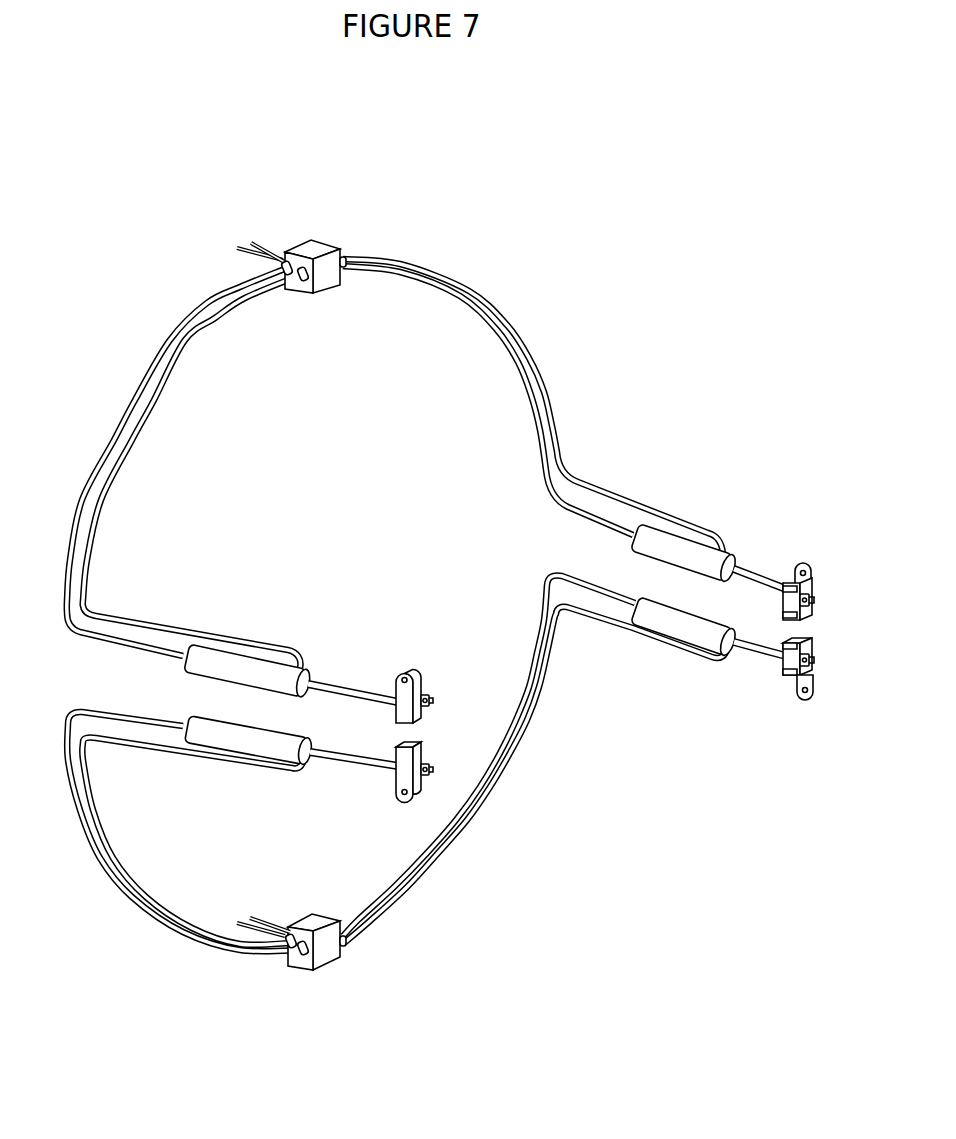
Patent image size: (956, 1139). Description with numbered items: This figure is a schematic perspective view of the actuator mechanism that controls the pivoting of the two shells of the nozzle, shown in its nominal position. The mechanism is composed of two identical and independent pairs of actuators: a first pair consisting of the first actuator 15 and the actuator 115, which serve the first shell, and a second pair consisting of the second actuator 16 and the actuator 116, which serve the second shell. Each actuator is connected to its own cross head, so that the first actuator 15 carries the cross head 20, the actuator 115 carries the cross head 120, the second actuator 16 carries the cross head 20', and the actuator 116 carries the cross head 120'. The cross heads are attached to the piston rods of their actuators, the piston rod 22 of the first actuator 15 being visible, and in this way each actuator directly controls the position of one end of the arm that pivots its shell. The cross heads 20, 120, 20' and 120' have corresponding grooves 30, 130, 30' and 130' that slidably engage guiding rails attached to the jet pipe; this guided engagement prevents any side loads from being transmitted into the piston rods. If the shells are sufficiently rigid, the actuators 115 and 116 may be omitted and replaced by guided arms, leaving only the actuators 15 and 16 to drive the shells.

The first actuator 15 is at (225, 663).
The second actuator 16 is at (270, 743).
The piston rod 22 is at (338, 678).
The cross head 20 is at (372, 701).
The cross head 20' is at (377, 788).
The groove 30 is at (460, 673).
The groove 30' is at (455, 746).
The actuator 115 is at (688, 548).
The actuator 116 is at (693, 632).
The cross head 120 is at (836, 600).
The cross head 120' is at (836, 669).
The groove 130 is at (737, 664).
The groove 130' is at (760, 708).